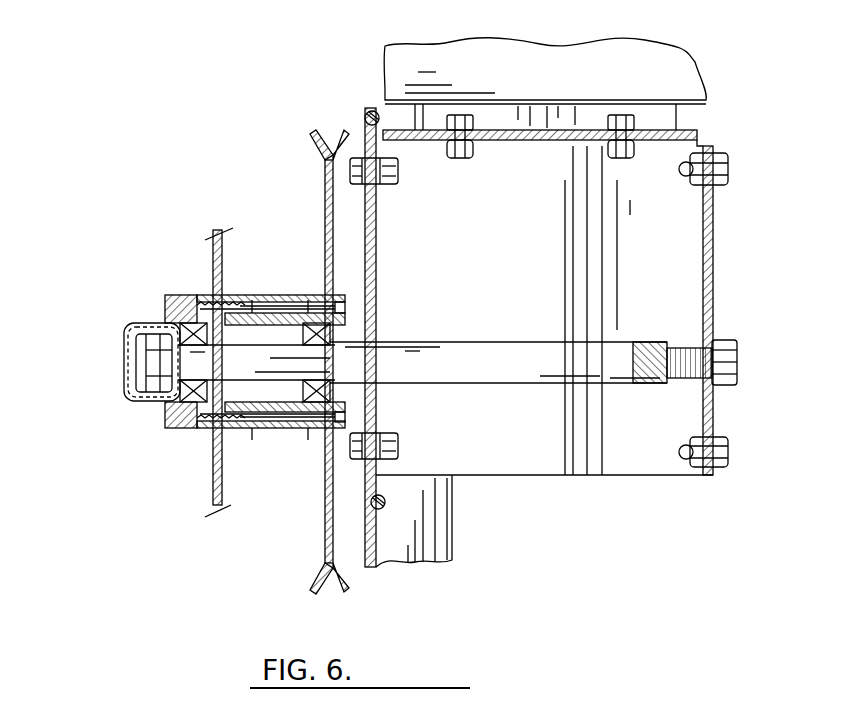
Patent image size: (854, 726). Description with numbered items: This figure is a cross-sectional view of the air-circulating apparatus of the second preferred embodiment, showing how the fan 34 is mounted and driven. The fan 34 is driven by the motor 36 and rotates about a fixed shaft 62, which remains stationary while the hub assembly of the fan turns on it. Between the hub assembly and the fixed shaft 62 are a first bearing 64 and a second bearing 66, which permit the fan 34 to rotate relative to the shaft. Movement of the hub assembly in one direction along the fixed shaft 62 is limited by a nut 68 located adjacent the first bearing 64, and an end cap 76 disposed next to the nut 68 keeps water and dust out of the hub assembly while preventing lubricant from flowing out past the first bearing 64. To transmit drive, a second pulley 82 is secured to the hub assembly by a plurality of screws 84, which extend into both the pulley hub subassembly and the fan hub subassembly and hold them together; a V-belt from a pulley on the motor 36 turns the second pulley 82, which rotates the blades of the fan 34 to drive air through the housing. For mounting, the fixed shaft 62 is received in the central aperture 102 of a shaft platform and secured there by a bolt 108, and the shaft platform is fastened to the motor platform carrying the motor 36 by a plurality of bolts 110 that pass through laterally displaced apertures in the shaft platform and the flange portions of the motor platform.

The fan 34 is at (213, 482).
The motor 36 is at (552, 89).
The fixed shaft 62 is at (255, 374).
The first bearing 64 is at (165, 416).
The second bearing 66 is at (308, 430).
The nut 68 is at (136, 392).
The end cap 76 is at (124, 350).
The second pulley 82 is at (325, 162).
The screws 84 is at (252, 430).
The central aperture 102 is at (535, 374).
The bolt 108 is at (737, 362).
The bolts 110 is at (398, 178).